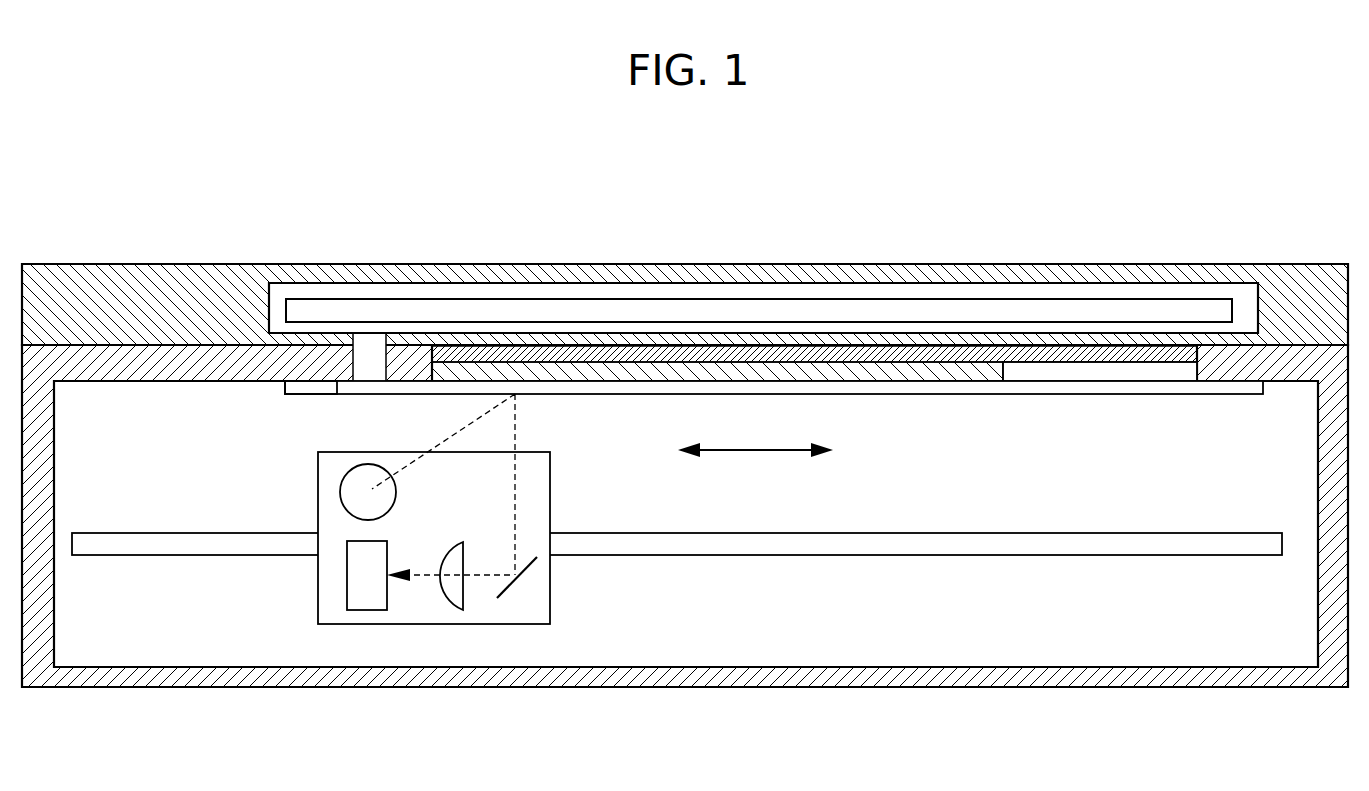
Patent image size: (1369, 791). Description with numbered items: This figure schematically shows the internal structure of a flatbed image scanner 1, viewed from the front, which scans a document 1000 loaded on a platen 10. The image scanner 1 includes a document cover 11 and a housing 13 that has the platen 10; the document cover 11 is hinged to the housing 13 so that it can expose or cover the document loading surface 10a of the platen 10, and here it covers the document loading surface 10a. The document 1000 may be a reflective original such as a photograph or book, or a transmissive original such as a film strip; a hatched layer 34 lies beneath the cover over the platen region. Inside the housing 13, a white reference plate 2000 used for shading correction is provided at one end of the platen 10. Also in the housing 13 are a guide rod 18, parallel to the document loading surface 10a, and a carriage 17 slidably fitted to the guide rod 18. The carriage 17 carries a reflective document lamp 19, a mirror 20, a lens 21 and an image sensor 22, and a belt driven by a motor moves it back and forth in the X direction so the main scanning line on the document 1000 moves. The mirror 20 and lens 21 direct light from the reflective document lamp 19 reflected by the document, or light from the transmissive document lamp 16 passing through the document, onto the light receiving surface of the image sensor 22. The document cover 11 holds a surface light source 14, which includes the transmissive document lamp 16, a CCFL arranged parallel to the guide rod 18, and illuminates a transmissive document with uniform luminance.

The image scanner 1 is at (912, 191).
The platen 10 is at (1117, 394).
The document loading surface 10a is at (1133, 381).
The document cover 11 is at (118, 263).
The housing 13 is at (117, 687).
The surface light source 14 is at (636, 295).
The transmissive document lamp 16 is at (802, 299).
The carriage 17 is at (550, 492).
The guide rod 18 is at (1142, 556).
The reflective document lamp 19 is at (341, 497).
The mirror 20 is at (527, 570).
The lens 21 is at (453, 611).
The image sensor 22 is at (363, 611).
The platen glass 34 is at (989, 346).
The document 1000 is at (923, 394).
The white reference plate 2000 is at (308, 395).